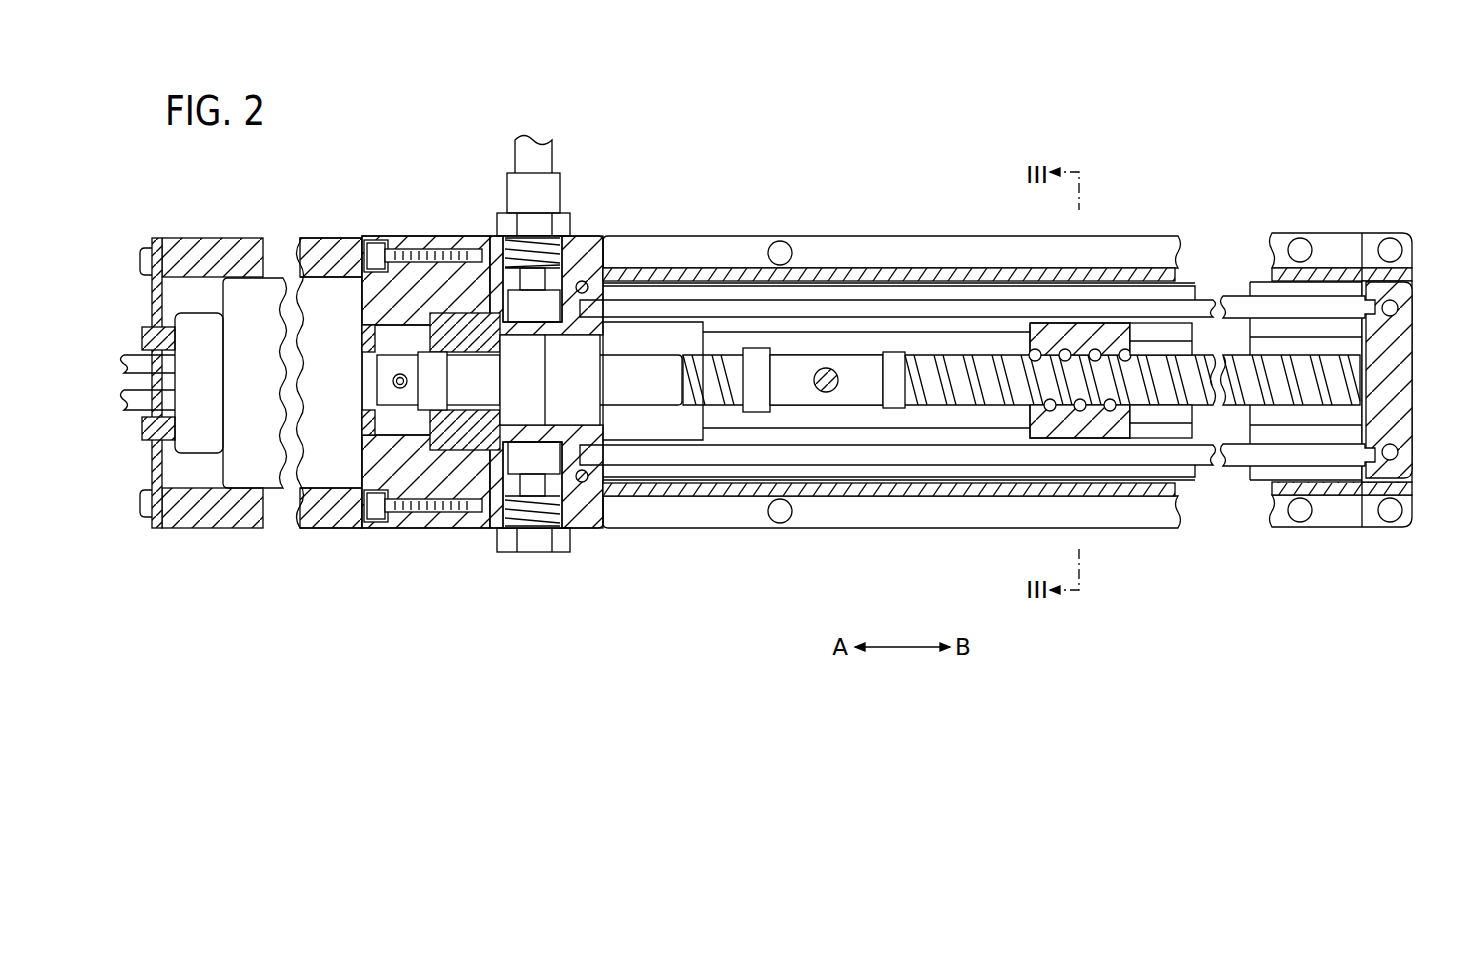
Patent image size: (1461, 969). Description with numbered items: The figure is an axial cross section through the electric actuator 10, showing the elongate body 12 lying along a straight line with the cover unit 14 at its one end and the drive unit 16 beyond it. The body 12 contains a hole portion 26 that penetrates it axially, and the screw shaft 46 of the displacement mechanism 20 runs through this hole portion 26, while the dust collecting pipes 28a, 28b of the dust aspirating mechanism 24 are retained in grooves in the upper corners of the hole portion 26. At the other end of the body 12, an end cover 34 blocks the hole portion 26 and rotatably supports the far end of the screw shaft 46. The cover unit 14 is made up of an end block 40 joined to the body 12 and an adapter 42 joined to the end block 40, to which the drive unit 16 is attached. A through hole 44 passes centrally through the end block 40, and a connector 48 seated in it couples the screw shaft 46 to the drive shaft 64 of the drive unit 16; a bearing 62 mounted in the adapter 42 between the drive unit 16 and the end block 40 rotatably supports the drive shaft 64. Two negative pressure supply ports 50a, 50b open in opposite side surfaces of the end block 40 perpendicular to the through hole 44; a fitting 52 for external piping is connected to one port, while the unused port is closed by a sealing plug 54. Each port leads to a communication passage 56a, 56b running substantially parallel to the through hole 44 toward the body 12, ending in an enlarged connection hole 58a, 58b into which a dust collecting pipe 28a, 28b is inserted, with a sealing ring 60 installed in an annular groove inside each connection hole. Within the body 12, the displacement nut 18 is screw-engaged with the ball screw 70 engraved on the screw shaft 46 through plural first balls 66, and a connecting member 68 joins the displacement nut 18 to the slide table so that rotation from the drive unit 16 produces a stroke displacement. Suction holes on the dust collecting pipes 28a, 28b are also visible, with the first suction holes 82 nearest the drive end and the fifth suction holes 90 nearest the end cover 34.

The electric actuator 10 is at (1237, 151).
The body 12 is at (905, 401).
The cover unit 14 is at (515, 384).
The drive unit 16 is at (211, 537).
The displacement nut 18 is at (1114, 427).
The displacement mechanism 20 is at (1021, 472).
The dust aspirating mechanism 24 is at (841, 282).
The hole portion 26 is at (1178, 328).
The dust collecting pipe 28a is at (757, 303).
The dust collecting pipe 28b is at (718, 456).
The end cover 34 is at (1326, 398).
The end block 40 is at (598, 507).
The adapter 42 is at (407, 238).
The through hole 44 is at (392, 376).
The screw shaft 46 is at (1300, 385).
The connector 48 is at (666, 360).
The negative pressure supply port 50a is at (547, 214).
The negative pressure supply port 50b is at (555, 560).
The fitting 52 is at (539, 188).
The sealing plug 54 is at (503, 543).
The communication passage 56a is at (566, 256).
The communication passage 56b is at (557, 452).
The connection hole 58a is at (577, 282).
The connection hole 58b is at (590, 440).
The sealing ring 60 is at (628, 300).
The bearing 62 is at (452, 322).
The drive shaft 64 is at (430, 392).
The first balls 66 is at (1092, 351).
The connecting member 68 is at (841, 420).
The ball screw 70 is at (1073, 388).
The first suction holes 82 is at (630, 315).
The fifth suction holes 90 is at (1330, 300).